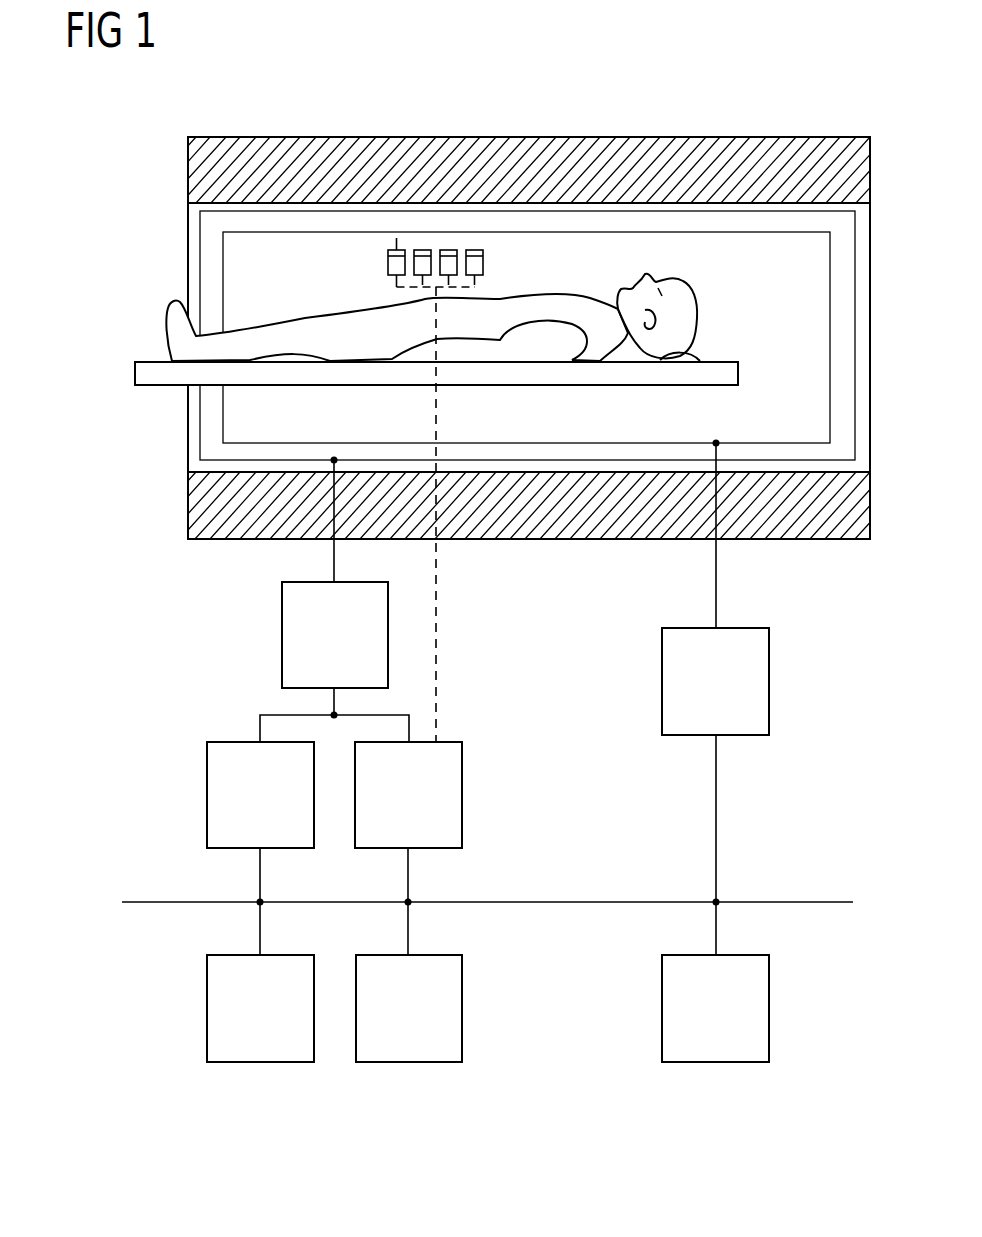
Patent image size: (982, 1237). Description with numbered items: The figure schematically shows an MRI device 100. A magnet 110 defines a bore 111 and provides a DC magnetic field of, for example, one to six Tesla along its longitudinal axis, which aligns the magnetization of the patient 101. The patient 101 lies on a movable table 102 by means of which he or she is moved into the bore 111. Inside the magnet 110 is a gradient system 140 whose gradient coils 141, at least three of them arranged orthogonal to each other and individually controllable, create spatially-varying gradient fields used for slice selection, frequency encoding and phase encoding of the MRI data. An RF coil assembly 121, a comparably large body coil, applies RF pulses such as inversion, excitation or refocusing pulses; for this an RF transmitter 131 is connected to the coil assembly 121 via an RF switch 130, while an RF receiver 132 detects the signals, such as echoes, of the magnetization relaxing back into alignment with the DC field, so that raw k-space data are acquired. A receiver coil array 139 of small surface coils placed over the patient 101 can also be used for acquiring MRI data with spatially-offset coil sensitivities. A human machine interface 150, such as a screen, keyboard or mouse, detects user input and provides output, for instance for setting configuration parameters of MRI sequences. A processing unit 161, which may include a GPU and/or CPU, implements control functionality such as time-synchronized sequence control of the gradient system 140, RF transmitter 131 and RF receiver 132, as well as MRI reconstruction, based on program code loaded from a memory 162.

The MRI device 100 is at (795, 85).
The magnet 110 is at (530, 136).
The bore 111 is at (857, 207).
The RF coil assembly 121 is at (857, 325).
The gradient coils 141 is at (830, 413).
The patient 101 is at (172, 300).
The movable table 102 is at (145, 373).
The receiver coil array 139 is at (535, 270).
The RF switch 130 is at (282, 635).
The RF transmitter 131 is at (207, 795).
The RF receiver 132 is at (462, 795).
The gradient system 140 is at (662, 680).
The human machine interface 150 is at (207, 1007).
The processing unit 161 is at (462, 1007).
The memory 162 is at (662, 1007).